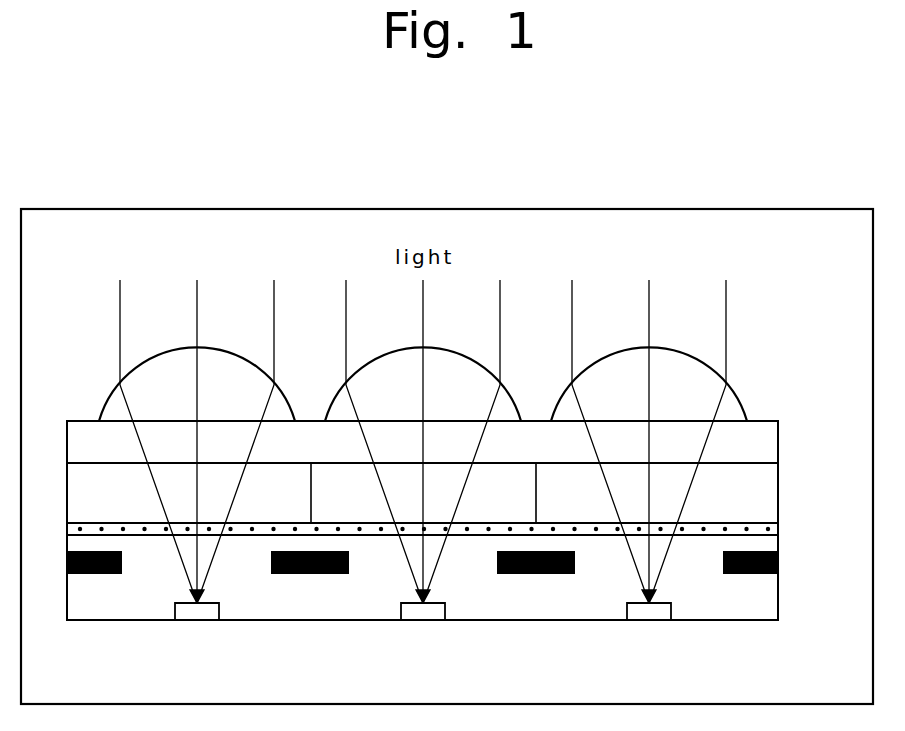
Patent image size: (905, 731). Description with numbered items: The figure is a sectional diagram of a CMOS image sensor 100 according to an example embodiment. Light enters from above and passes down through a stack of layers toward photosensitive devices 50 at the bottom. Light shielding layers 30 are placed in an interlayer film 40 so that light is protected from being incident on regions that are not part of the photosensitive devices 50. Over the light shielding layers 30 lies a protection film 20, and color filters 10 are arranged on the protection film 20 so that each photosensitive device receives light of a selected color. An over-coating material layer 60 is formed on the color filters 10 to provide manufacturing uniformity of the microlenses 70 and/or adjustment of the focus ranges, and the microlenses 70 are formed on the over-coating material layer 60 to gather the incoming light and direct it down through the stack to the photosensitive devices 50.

The image sensor 100 is at (770, 209).
The microlenses 70 is at (679, 369).
The over-coating material (OCM) layer 60 is at (772, 445).
The color filters 10 is at (772, 495).
The protection film 20 is at (772, 530).
The light shielding layers 30 is at (778, 563).
The interlayer film 40 is at (772, 603).
The photosensitive devices 50 is at (205, 612).